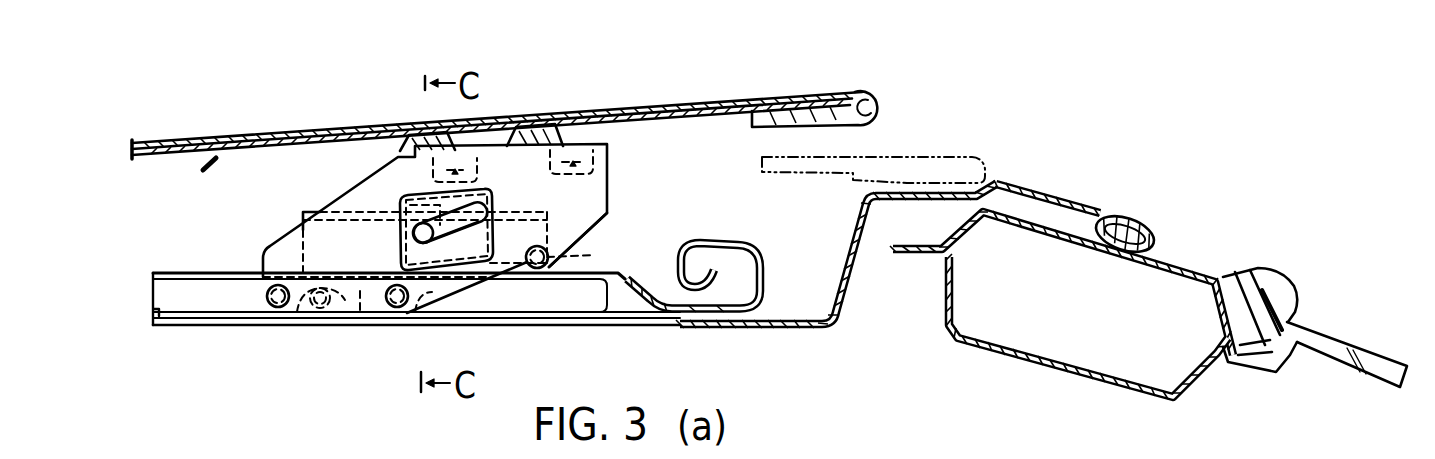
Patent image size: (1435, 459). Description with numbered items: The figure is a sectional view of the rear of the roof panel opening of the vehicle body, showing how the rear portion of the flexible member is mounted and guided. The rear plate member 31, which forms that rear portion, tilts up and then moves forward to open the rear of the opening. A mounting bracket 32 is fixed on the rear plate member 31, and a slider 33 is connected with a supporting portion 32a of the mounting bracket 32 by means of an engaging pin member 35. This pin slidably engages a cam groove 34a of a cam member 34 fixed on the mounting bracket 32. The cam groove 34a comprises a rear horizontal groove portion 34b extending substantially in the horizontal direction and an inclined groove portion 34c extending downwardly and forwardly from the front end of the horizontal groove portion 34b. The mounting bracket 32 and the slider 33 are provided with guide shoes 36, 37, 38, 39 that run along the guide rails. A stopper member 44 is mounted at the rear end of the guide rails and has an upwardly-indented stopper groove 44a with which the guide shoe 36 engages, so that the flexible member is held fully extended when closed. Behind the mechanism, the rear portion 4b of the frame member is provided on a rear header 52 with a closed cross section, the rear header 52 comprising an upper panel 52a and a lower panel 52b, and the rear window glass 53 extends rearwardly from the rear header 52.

The rear plate member 31 is at (233, 160).
The mounting bracket 32 is at (613, 173).
The supporting portion 32a is at (613, 209).
The slider 33 is at (320, 211).
The cam member 34 is at (491, 190).
The cam groove 34a is at (462, 228).
The rear horizontal groove portion 34b is at (490, 217).
The inclined groove portion 34c is at (432, 229).
The engaging pin member 35 is at (415, 234).
The guide shoe 36 is at (550, 258).
The guide shoe 37 is at (265, 294).
The guide shoe 38 is at (422, 307).
The guide shoe 39 is at (347, 300).
The stopper member 44 is at (758, 300).
The stopper groove 44a is at (718, 275).
The rear portion of the frame member 4b is at (1020, 180).
The rear header 52 is at (1187, 402).
The upper panel 52a is at (1186, 258).
The lower panel 52b is at (1050, 380).
The rear window glass 53 is at (1337, 330).